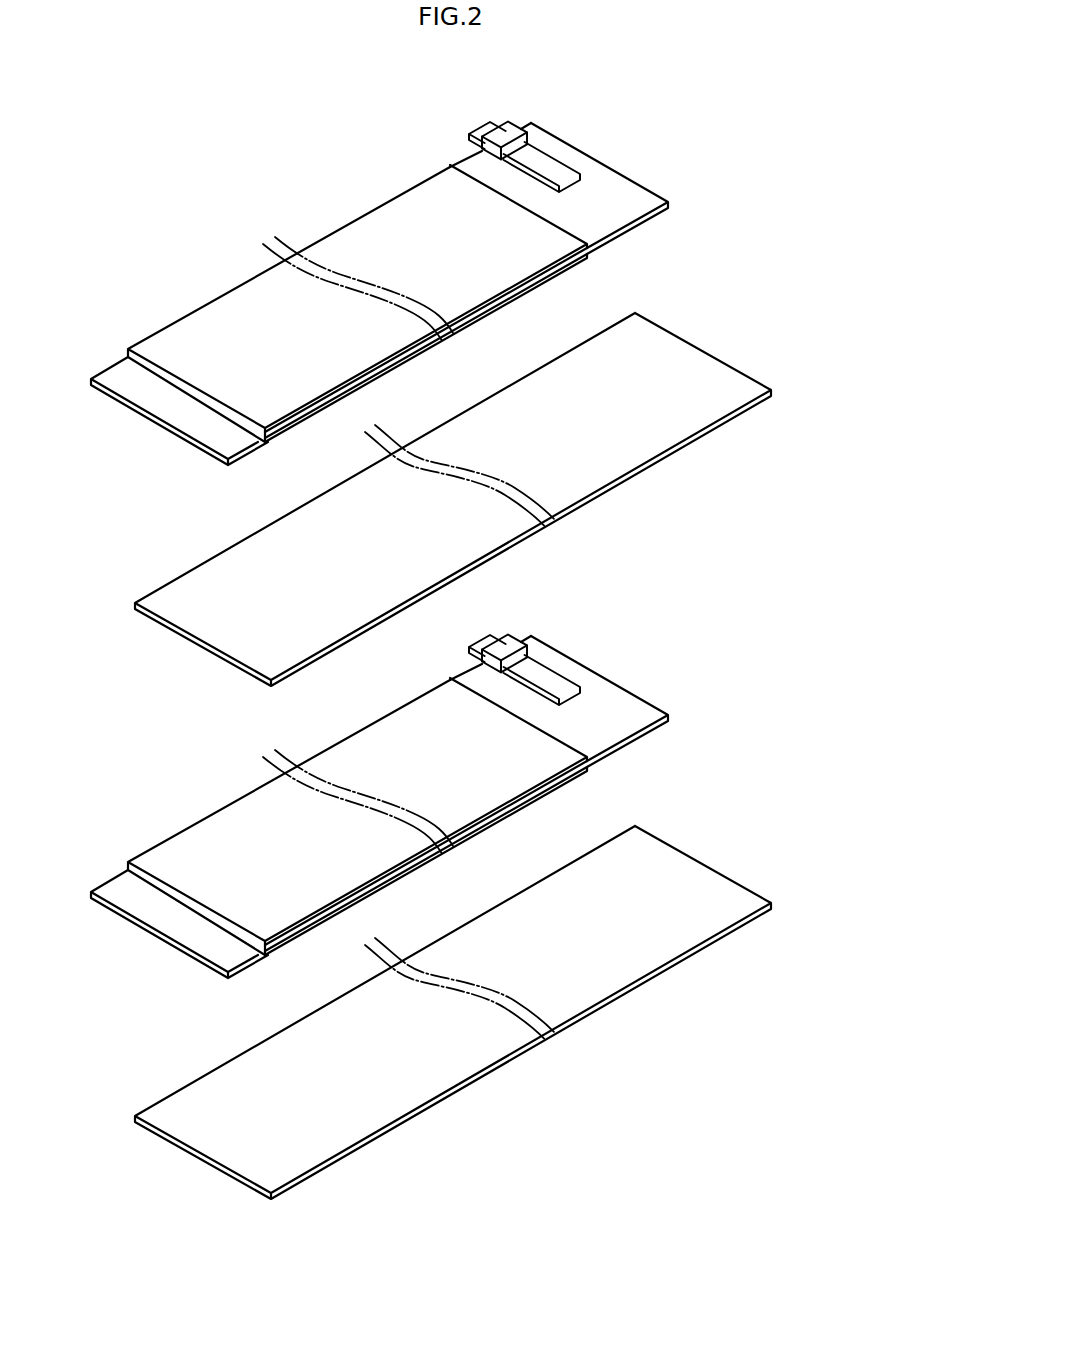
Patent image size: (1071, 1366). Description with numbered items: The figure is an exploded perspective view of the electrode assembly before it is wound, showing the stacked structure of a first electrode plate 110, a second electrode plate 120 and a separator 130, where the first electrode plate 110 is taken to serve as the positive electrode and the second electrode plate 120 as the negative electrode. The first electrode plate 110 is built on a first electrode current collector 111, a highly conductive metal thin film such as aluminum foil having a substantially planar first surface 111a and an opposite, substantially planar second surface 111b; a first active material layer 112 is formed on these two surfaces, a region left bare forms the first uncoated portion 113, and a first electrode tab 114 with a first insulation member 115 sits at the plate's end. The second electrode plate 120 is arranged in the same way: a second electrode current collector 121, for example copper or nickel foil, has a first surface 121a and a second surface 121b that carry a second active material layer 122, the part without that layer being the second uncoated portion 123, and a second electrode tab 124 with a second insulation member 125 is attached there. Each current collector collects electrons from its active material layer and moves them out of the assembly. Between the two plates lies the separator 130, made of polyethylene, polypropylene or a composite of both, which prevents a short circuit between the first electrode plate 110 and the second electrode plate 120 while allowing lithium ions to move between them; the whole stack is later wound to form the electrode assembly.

The first electrode plate 110 is at (133, 434).
The first electrode current collector 111 is at (587, 256).
The first surface 111a is at (641, 213).
The second surface 111b is at (635, 228).
The first active material layer 112 is at (533, 281).
The first uncoated portion 113 is at (613, 182).
The first electrode tab 114 is at (484, 126).
The first insulation member 115 is at (516, 127).
The second electrode plate 120 is at (388, 797).
The second electrode current collector 121 is at (421, 816).
The first surface 121a is at (490, 809).
The second surface 121b is at (467, 848).
The second active material layer 122 is at (426, 859).
The second uncoated portion 123 is at (379, 822).
The second electrode tab 124 is at (507, 649).
The second insulation member 125 is at (505, 629).
The separator 130 is at (670, 420).